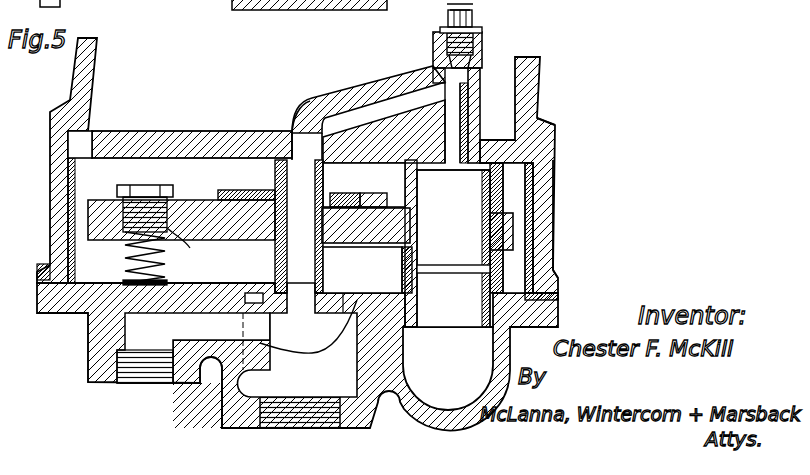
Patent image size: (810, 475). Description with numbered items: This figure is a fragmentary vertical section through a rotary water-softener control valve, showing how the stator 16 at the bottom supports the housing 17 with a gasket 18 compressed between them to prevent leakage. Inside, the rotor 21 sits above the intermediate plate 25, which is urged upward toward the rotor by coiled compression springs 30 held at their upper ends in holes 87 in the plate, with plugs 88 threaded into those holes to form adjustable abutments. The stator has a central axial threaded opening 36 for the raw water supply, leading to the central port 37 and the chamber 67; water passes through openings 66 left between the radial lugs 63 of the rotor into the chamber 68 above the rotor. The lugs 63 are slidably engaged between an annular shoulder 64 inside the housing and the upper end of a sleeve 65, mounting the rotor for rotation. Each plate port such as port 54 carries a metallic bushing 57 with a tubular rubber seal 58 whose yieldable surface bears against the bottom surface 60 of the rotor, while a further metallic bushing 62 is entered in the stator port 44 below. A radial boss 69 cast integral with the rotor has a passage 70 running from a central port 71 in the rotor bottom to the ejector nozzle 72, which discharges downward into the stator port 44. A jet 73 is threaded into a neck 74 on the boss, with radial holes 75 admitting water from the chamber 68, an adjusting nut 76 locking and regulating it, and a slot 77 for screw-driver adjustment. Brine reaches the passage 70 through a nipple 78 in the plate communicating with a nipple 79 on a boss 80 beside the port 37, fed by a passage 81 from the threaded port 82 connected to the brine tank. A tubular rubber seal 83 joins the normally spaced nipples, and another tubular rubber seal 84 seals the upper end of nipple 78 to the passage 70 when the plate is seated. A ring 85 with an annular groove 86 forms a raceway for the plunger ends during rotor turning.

The stator 16 is at (82, 293).
The housing 17 is at (548, 241).
The gasket 18 is at (551, 300).
The rotor 21 is at (180, 135).
The intermediate plate 25 is at (185, 200).
The coiled compression springs 30 is at (165, 263).
The central axial threaded opening 36 is at (230, 410).
The central port 37 is at (355, 301).
The stator port 44 is at (451, 328).
The port in intermediate plate 54 is at (447, 243).
The metallic bushing 57 is at (490, 240).
The tubular rubber seal 58 is at (453, 186).
The bottom surface of rotor 60 is at (126, 159).
The metallic bushing 62 is at (402, 266).
The radial lugs 63 is at (511, 228).
The annular shoulder 64 is at (550, 129).
The sleeve 65 is at (541, 219).
The openings 66 is at (92, 141).
The chamber 67 is at (526, 272).
The chamber 68 is at (541, 86).
The radial boss 69 is at (345, 96).
The passage 70 is at (323, 117).
The central port 71 is at (364, 185).
The ejector nozzle 72 is at (463, 126).
The jet 73 is at (433, 48).
The neck 74 is at (476, 50).
The radial holes 75 is at (474, 20).
The adjusting nut 76 is at (440, 30).
The slot 77 is at (445, 5).
The nipple 78 is at (274, 244).
The nipple 79 is at (362, 270).
The boss 80 is at (312, 352).
The passage 81 is at (190, 300).
The threaded port 82 is at (132, 385).
The tubular rubber seal 83 is at (256, 293).
The tubular rubber seal 84 is at (268, 187).
The ring 85 is at (345, 192).
The annular groove 86 is at (378, 193).
The holes 87 is at (188, 244).
The plugs 88 is at (146, 186).